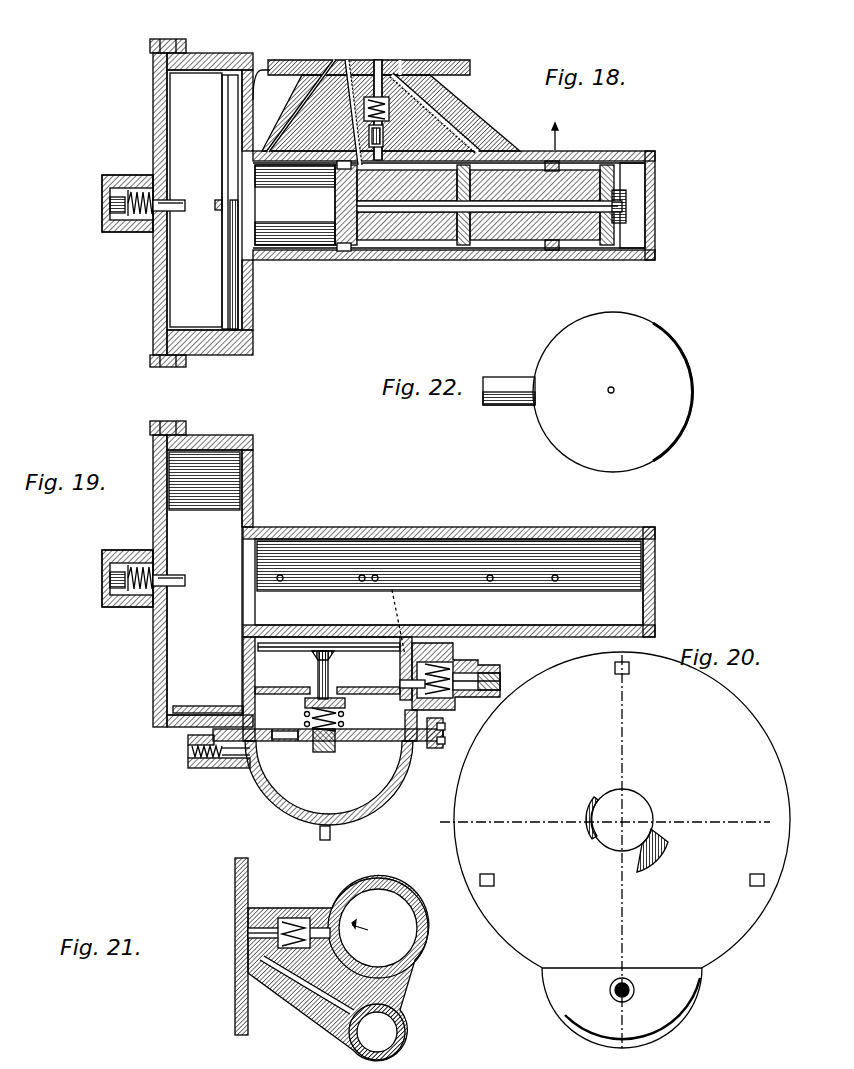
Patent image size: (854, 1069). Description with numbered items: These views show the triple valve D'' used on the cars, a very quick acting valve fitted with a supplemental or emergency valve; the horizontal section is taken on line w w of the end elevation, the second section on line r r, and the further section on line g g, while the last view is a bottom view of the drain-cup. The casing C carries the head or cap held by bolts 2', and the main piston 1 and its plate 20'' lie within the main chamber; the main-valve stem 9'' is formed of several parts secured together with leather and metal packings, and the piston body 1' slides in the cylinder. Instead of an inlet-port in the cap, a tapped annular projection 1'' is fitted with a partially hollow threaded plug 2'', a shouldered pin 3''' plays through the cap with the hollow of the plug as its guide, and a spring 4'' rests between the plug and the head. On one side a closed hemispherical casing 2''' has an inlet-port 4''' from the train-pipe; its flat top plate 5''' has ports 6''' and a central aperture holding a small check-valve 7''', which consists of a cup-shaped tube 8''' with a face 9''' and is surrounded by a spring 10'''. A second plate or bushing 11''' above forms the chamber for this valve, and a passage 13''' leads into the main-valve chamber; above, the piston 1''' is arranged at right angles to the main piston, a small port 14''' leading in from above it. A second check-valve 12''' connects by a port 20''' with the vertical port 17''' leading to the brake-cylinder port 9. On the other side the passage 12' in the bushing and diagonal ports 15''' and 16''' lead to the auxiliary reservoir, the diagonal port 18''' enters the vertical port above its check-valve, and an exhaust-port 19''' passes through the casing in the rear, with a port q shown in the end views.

In FIG. 18, the casing C is at (194, 204).
In FIG. 19, the casing C is at (158, 655).
In FIG. 20, the casing C is at (622, 850).
In FIG. 18, the flange bolt 2' is at (182, 201).
In FIG. 19, the flange bolt 2' is at (184, 427).
In FIG. 18, the port or passage 12' is at (256, 65).
In FIG. 18, the chamber 1 is at (196, 200).
In FIG. 18, the piston plate 20'' is at (215, 202).
In FIG. 18, the tapped annular projection 1'' is at (127, 214).
In FIG. 19, the tapped annular projection 1'' is at (127, 589).
In FIG. 18, the threaded plug 2'' is at (98, 208).
In FIG. 19, the threaded plug 2'' is at (98, 583).
In FIG. 20, the threaded plug 2'' is at (626, 830).
In FIG. 18, the spring 4'' is at (136, 183).
In FIG. 19, the spring 4'' is at (136, 558).
In FIG. 18, the stem 3''' is at (172, 215).
In FIG. 19, the stem 3''' is at (172, 590).
In FIG. 18, the triple valve D'' is at (454, 217).
In FIG. 19, the triple valve D'' is at (449, 570).
In FIG. 21, the triple valve D'' is at (347, 959).
In FIG. 18, the main-valve stem 9'' is at (306, 205).
In FIG. 18, the piston body 1' is at (491, 227).
In FIG. 18, the section line g is at (353, 236).
In FIG. 18, the port 20''' is at (391, 94).
In FIG. 19, the port 20''' is at (411, 617).
In FIG. 21, the port 20''' is at (307, 985).
In FIG. 18, the diagonal port 15''' is at (299, 106).
In FIG. 18, the diagonal port 16''' is at (350, 101).
In FIG. 18, the diagonal port 18''' is at (445, 113).
In FIG. 18, the brake cylinder port 9 is at (369, 84).
In FIG. 18, the vertical port 17''' is at (394, 95).
In FIG. 21, the vertical port 17''' is at (262, 937).
In FIG. 18, the exhaust-port 19''' is at (574, 186).
In FIG. 22, the port q is at (613, 392).
In FIG. 19, the port q is at (385, 540).
In FIG. 22, the inlet-port 4''' is at (509, 398).
In FIG. 19, the inlet-port 4''' is at (162, 755).
In FIG. 20, the inlet-port 4''' is at (643, 989).
In FIG. 19, the small port 14''' is at (327, 668).
In FIG. 19, the piston 1''' is at (329, 656).
In FIG. 19, the small check-valve 7''' is at (343, 684).
In FIG. 19, the plate or bushing 11''' is at (327, 687).
In FIG. 19, the face 9''' is at (312, 709).
In FIG. 19, the spring 10''' is at (345, 724).
In FIG. 19, the ports 6''' is at (333, 735).
In FIG. 19, the flat plate 5''' is at (328, 744).
In FIG. 19, the cup-shaped tube 8''' is at (324, 751).
In FIG. 19, the passage or port 13''' is at (208, 698).
In FIG. 19, the hemispherical casing 2''' is at (329, 790).
In FIG. 19, the check-valve 12''' is at (444, 676).
In FIG. 21, the check-valve 12''' is at (377, 1032).
In FIG. 20, the section line r is at (622, 843).
In FIG. 20, the section line w is at (602, 822).